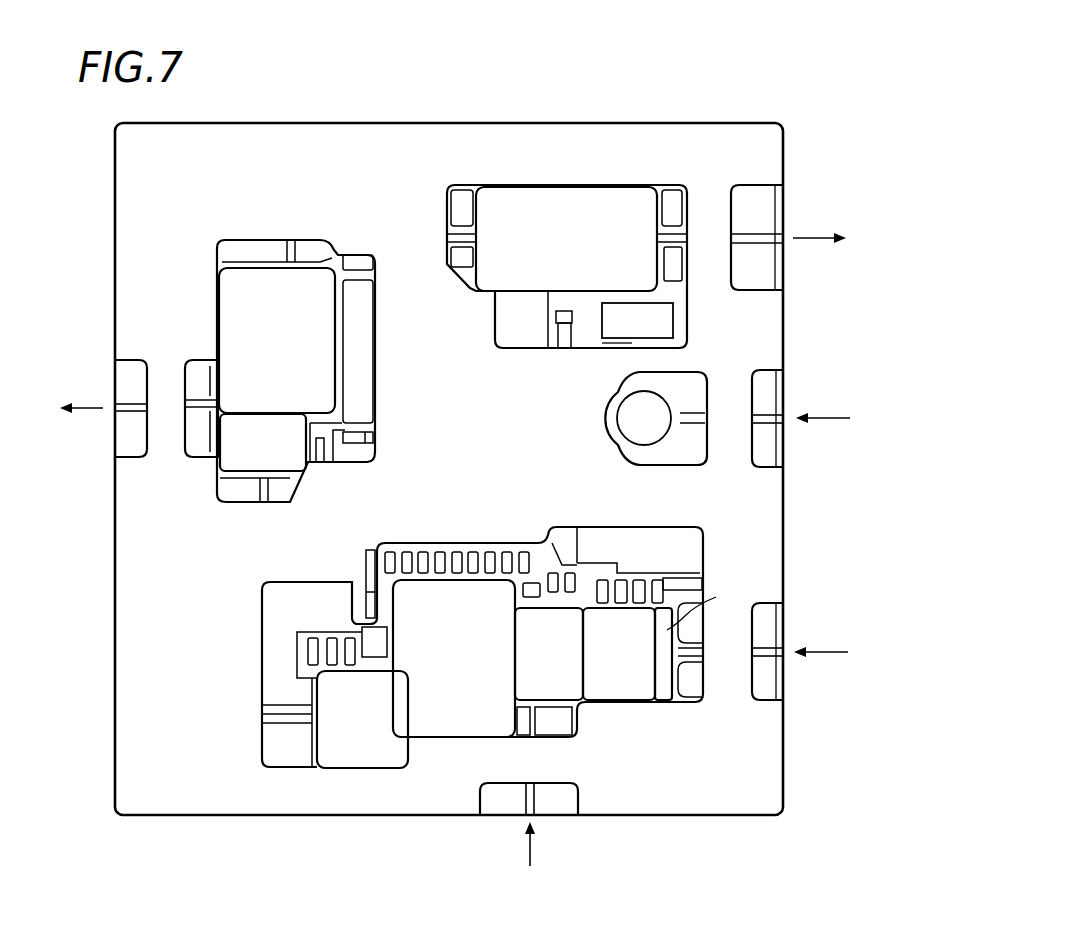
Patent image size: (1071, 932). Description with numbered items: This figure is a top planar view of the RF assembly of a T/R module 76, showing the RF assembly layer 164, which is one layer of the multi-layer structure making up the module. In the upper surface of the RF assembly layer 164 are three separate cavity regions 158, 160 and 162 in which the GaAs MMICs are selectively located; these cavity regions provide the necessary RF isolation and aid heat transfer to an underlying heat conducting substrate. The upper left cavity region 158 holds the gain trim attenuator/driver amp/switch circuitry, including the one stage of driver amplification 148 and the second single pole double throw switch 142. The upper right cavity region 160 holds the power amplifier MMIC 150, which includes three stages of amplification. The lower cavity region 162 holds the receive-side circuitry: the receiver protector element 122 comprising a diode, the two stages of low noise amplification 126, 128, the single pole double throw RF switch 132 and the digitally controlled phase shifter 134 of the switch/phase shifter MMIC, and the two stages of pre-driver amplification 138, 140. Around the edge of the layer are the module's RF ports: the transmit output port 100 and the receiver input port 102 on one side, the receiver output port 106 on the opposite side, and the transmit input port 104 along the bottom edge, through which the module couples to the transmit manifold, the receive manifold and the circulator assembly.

The T/R module 76 is at (453, 454).
The transmit output port 100 is at (784, 243).
The receiver input port 102 is at (784, 658).
The transmit input port 104 is at (536, 818).
The receiver output port 106 is at (112, 413).
The receiver protector element 122 is at (665, 703).
The first stage of low noise amplification 126 is at (619, 677).
The second stage of low noise amplification 128 is at (607, 702).
The single pole double throw RF switch 132 is at (515, 682).
The digitally controlled phase shifter 134 is at (423, 738).
The first stage of pre-driver amplification 138 is at (330, 737).
The second stage of pre-driver amplification 140 is at (342, 768).
The second single pole double throw switch 142 is at (218, 460).
The driver amplification stage 148 is at (217, 292).
The power amplifier MMIC 150 is at (541, 185).
The cavity region 158 is at (270, 328).
The cavity region 160 is at (567, 281).
The cavity region 162 is at (500, 633).
The RF assembly layer 164 is at (115, 715).